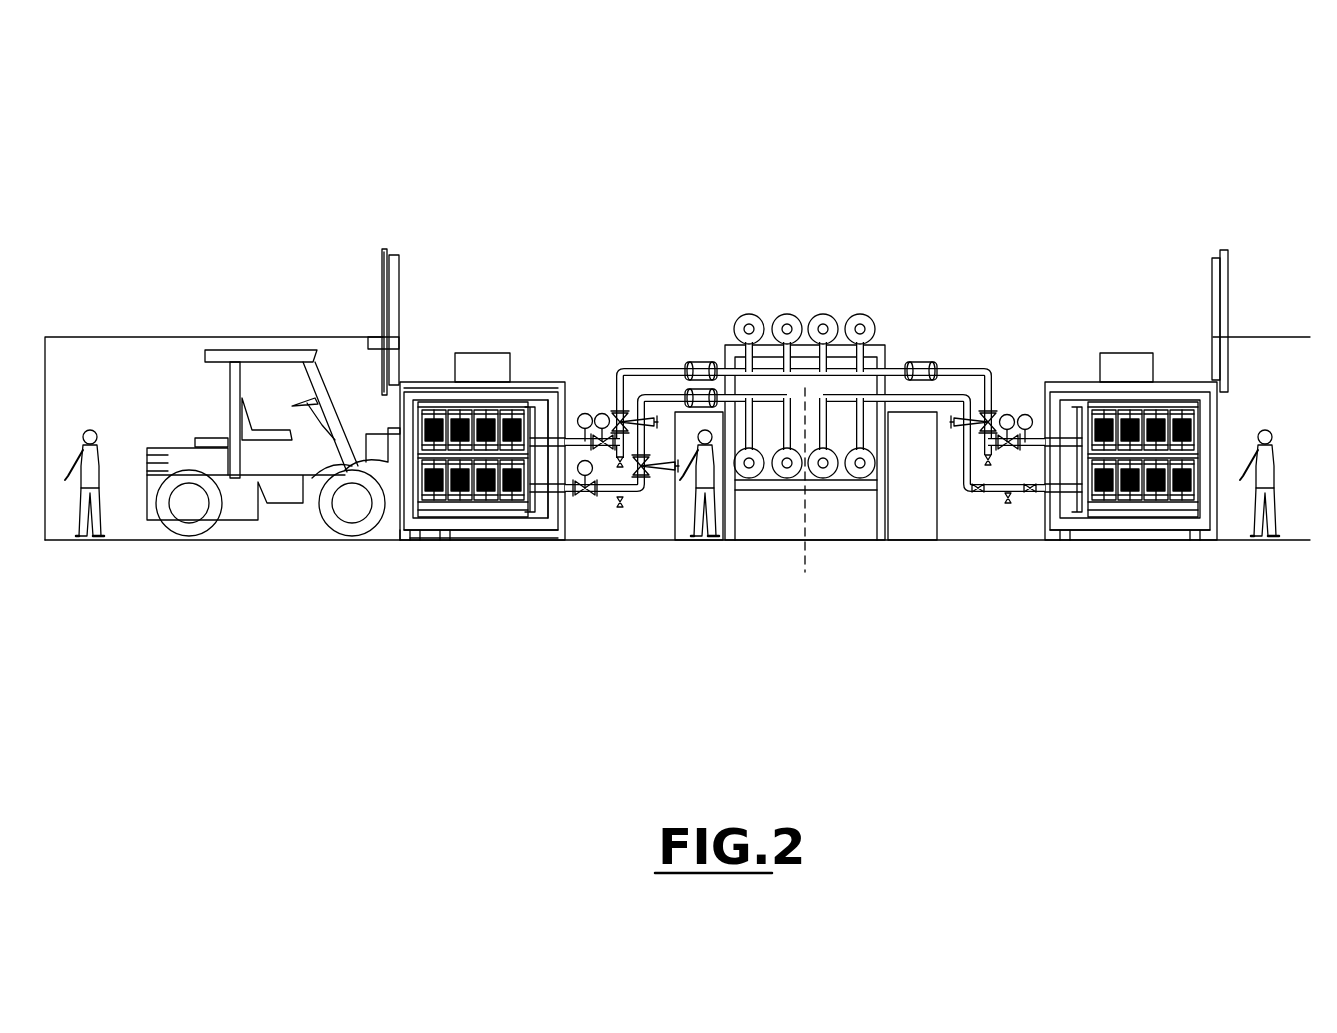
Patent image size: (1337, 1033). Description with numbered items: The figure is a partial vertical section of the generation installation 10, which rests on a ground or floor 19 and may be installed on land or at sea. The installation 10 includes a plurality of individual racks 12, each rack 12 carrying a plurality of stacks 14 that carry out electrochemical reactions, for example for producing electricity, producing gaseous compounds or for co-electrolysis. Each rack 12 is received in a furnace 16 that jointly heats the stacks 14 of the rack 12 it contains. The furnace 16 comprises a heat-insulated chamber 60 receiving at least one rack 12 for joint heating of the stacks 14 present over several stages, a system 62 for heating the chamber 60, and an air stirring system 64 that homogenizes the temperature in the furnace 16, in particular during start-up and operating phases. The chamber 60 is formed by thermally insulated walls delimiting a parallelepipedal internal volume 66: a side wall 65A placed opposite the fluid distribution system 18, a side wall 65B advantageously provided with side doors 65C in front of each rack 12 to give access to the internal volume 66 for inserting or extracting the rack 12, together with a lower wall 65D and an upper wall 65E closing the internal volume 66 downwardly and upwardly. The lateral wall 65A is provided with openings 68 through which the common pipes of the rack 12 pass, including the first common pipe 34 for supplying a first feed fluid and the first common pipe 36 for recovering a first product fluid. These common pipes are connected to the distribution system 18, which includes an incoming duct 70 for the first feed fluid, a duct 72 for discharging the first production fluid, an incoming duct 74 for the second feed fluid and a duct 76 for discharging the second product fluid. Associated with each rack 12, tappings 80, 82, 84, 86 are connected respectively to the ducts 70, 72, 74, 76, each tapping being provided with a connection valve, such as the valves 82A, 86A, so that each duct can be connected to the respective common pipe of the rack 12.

The installation 10 is at (1150, 102).
The rack 12 is at (468, 532).
The stacks 14 is at (437, 525).
The furnace 16 is at (778, 410).
The fluid distribution system 18 is at (801, 390).
The floor 19 is at (1298, 540).
The first common pipe 34 is at (580, 495).
The first common pipe 36 is at (592, 414).
The heat-insulated chamber 60 is at (567, 537).
The heating system 62 is at (567, 405).
The air stirring system 64 is at (487, 362).
The side wall 65A is at (560, 508).
The side wall 65B is at (395, 535).
The side doors 65C is at (394, 288).
The lower wall 65D is at (520, 535).
The upper wall 65E is at (440, 393).
The internal volume 66 is at (405, 410).
The openings 68 is at (525, 410).
The incoming duct 70 is at (752, 472).
The discharge duct 72 is at (748, 312).
The incoming duct 74 is at (788, 312).
The discharge duct 76 is at (793, 483).
The tapping 80 is at (745, 445).
The tapping 82 is at (668, 370).
The connection valve 82A is at (625, 412).
The tapping 84 is at (767, 368).
The tapping 86 is at (790, 472).
The connection valve 86A is at (645, 476).